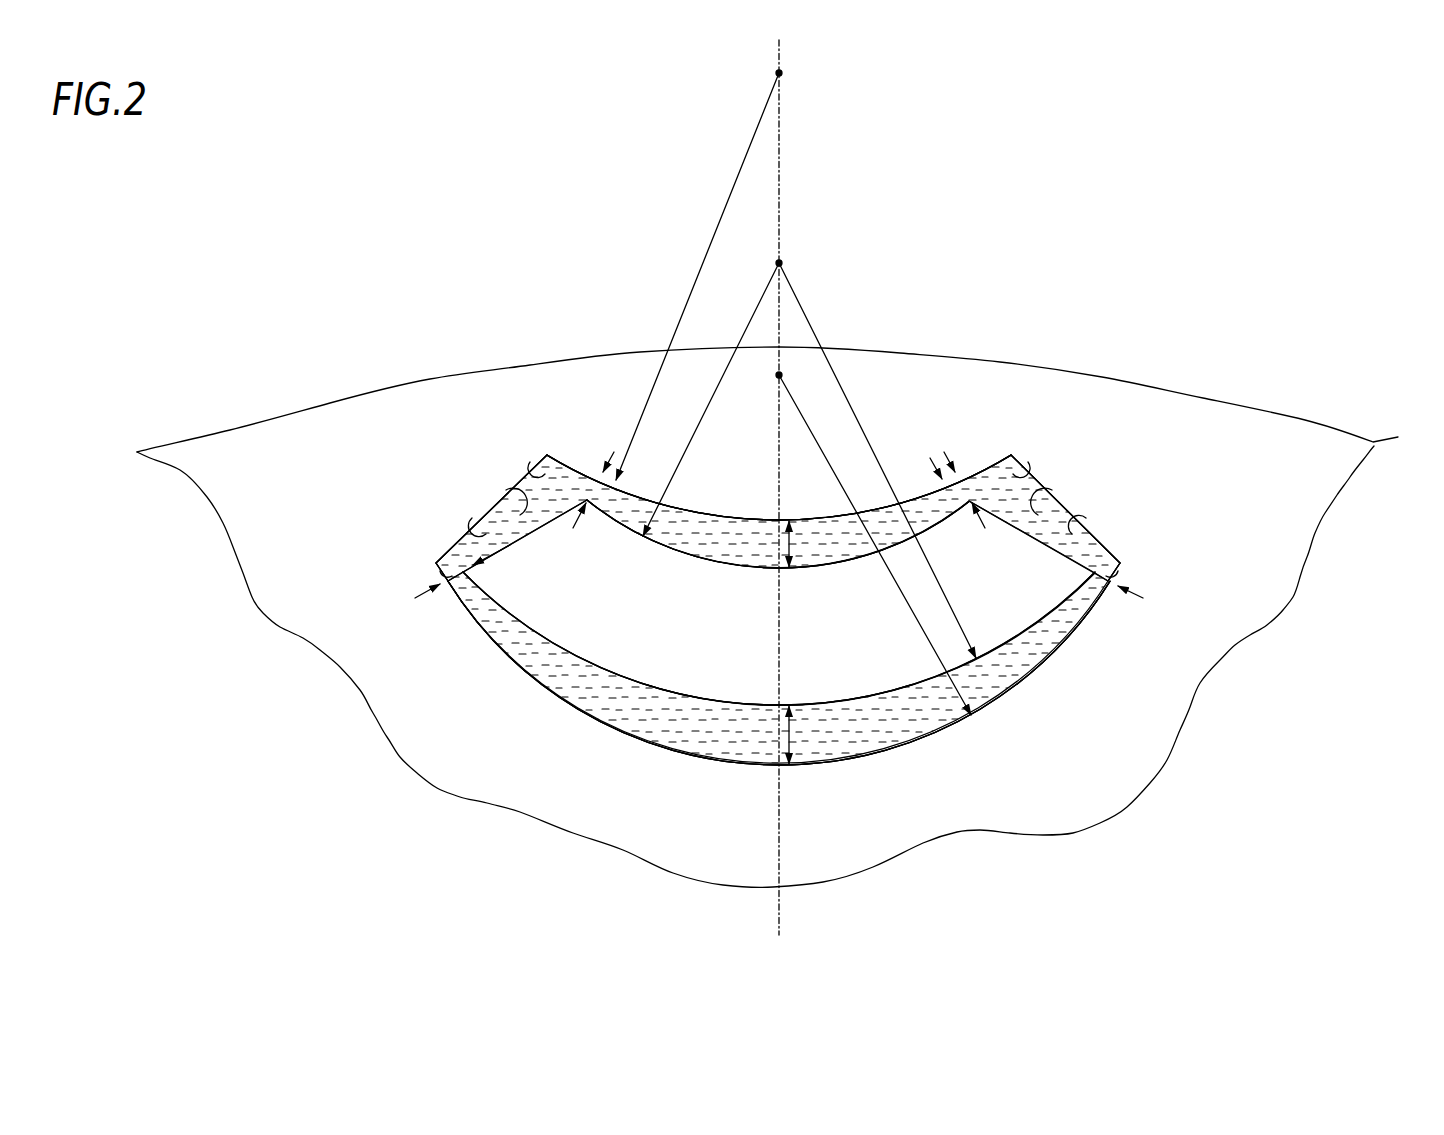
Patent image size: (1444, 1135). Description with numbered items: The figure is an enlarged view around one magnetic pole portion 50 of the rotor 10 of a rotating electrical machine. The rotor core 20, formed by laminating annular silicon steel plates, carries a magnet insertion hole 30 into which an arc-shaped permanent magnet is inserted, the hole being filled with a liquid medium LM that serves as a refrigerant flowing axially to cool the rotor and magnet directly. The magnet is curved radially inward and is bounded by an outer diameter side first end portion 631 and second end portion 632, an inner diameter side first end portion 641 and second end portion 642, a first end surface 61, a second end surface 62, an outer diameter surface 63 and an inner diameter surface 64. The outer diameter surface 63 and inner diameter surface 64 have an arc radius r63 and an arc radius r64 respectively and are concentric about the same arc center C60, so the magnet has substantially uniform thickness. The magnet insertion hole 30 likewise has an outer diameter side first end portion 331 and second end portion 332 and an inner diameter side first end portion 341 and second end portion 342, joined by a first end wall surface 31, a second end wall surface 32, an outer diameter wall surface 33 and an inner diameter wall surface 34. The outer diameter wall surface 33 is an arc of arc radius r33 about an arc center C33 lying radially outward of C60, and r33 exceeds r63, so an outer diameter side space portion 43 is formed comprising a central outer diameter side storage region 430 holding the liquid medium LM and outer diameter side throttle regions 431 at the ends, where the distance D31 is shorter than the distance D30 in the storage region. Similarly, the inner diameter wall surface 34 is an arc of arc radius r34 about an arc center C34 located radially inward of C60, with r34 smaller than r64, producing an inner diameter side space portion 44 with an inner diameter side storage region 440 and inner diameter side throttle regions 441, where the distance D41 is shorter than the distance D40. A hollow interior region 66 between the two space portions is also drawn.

The rotor 10 is at (1281, 97).
The rotor core 20 is at (1318, 433).
The magnet insertion hole 30 is at (887, 733).
The first end wall surface 31 is at (466, 528).
The second end wall surface 32 is at (1053, 513).
The outer diameter wall surface 33 is at (936, 492).
The inner diameter wall surface 34 is at (1017, 682).
The outer diameter side space portion 43 is at (825, 545).
The inner diameter side space portion 44 is at (828, 750).
The magnetic pole portion 50 is at (868, 372).
The first end surface 61 is at (512, 482).
The second end surface 62 is at (1025, 470).
The outer diameter surface 63 is at (703, 536).
The inner diameter surface 64 is at (628, 680).
The hollow portion 66 is at (717, 680).
The outer diameter side first end portion 331 is at (528, 470).
The outer diameter side second end portion 332 is at (1012, 454).
The inner diameter side first end portion 341 is at (434, 572).
The inner diameter side second end portion 342 is at (1125, 582).
The outer diameter side storage region 430 is at (752, 536).
The outer diameter side throttle region 431 is at (623, 487).
The inner diameter side storage region 440 is at (735, 768).
The inner diameter side throttle region 441 is at (465, 582).
The outer diameter side first end portion 631 is at (587, 500).
The outer diameter side second end portion 632 is at (966, 475).
The inner diameter side first end portion 641 is at (438, 562).
The inner diameter side second end portion 642 is at (1113, 574).
The arc center C33 is at (783, 73).
The arc center C34 is at (778, 376).
The arc center C60 is at (781, 262).
The arc radius r33 is at (760, 112).
The arc radius r34 is at (816, 440).
The arc radius r63 is at (766, 287).
The arc radius r64 is at (797, 290).
The distance D30 is at (795, 548).
The distance D31 is at (786, 518).
The distance D40 is at (793, 732).
The distance D41 is at (457, 598).
The liquid medium LM is at (930, 708).